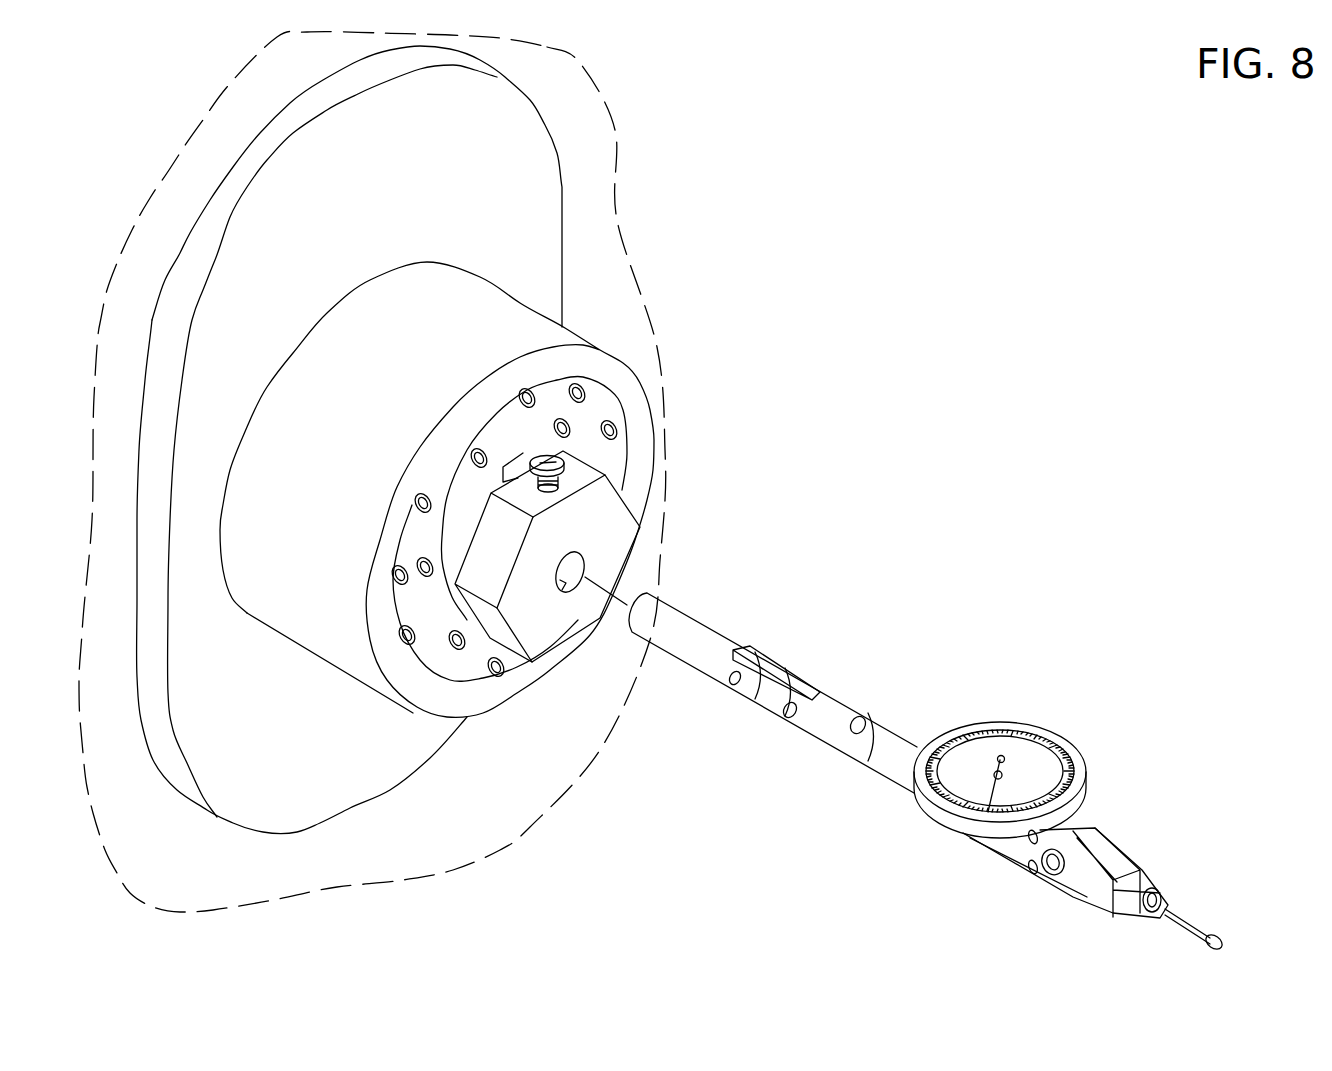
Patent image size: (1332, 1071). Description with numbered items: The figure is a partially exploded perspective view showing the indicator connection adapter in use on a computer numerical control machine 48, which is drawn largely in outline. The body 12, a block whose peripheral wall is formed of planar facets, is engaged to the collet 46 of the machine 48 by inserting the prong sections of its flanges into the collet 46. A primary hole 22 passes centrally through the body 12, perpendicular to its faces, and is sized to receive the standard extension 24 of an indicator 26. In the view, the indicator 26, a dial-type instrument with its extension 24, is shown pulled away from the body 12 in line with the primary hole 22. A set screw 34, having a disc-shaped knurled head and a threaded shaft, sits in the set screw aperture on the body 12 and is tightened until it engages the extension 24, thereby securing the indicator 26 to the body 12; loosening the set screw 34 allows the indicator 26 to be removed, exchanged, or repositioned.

The body 12 is at (607, 520).
The primary hole 22 is at (583, 580).
The extension 24 is at (707, 640).
The indicator 26 is at (1107, 758).
The set screw 34 is at (545, 462).
The collet 46 is at (523, 457).
The computer numerical control machine 48 is at (587, 132).